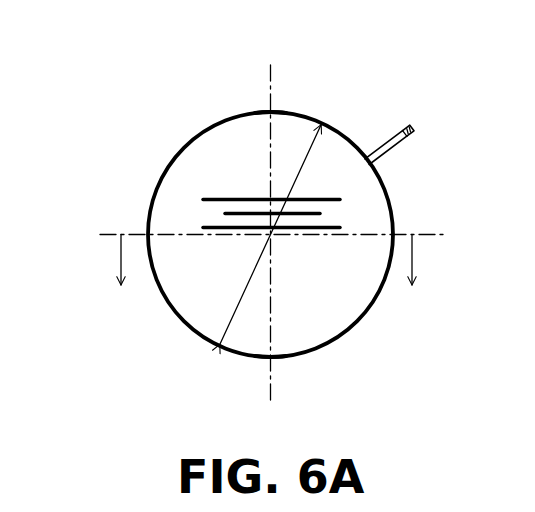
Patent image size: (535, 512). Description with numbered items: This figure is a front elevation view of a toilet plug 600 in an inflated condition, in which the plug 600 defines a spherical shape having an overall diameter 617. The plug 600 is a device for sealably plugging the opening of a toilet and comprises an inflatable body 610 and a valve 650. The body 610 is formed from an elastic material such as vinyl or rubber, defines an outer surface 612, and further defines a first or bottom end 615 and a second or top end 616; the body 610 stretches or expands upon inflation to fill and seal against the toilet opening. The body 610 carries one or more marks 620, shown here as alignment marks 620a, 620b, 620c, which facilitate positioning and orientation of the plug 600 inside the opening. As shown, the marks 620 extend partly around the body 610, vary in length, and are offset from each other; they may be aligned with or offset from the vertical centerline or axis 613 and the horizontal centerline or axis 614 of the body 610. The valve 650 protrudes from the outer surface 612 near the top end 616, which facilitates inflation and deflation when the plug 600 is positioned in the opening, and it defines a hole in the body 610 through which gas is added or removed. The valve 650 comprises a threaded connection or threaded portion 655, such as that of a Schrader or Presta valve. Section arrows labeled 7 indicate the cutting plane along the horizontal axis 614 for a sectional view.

The toilet plug 600 is at (106, 65).
The inflatable body 610 is at (243, 252).
The outer surface 612 is at (180, 320).
The vertical centerline or axis 613 is at (271, 306).
The horizontal centerline or axis 614 is at (424, 233).
The bottom end 615 is at (245, 360).
The top end 616 is at (279, 112).
The overall diameter 617 is at (249, 273).
The marks 620 is at (184, 176).
The alignment mark 620a is at (210, 227).
The alignment mark 620b is at (245, 213).
The alignment mark 620c is at (262, 199).
The valve 650 is at (389, 139).
The threaded portion 655 is at (417, 125).
The section line 7 is at (267, 278).